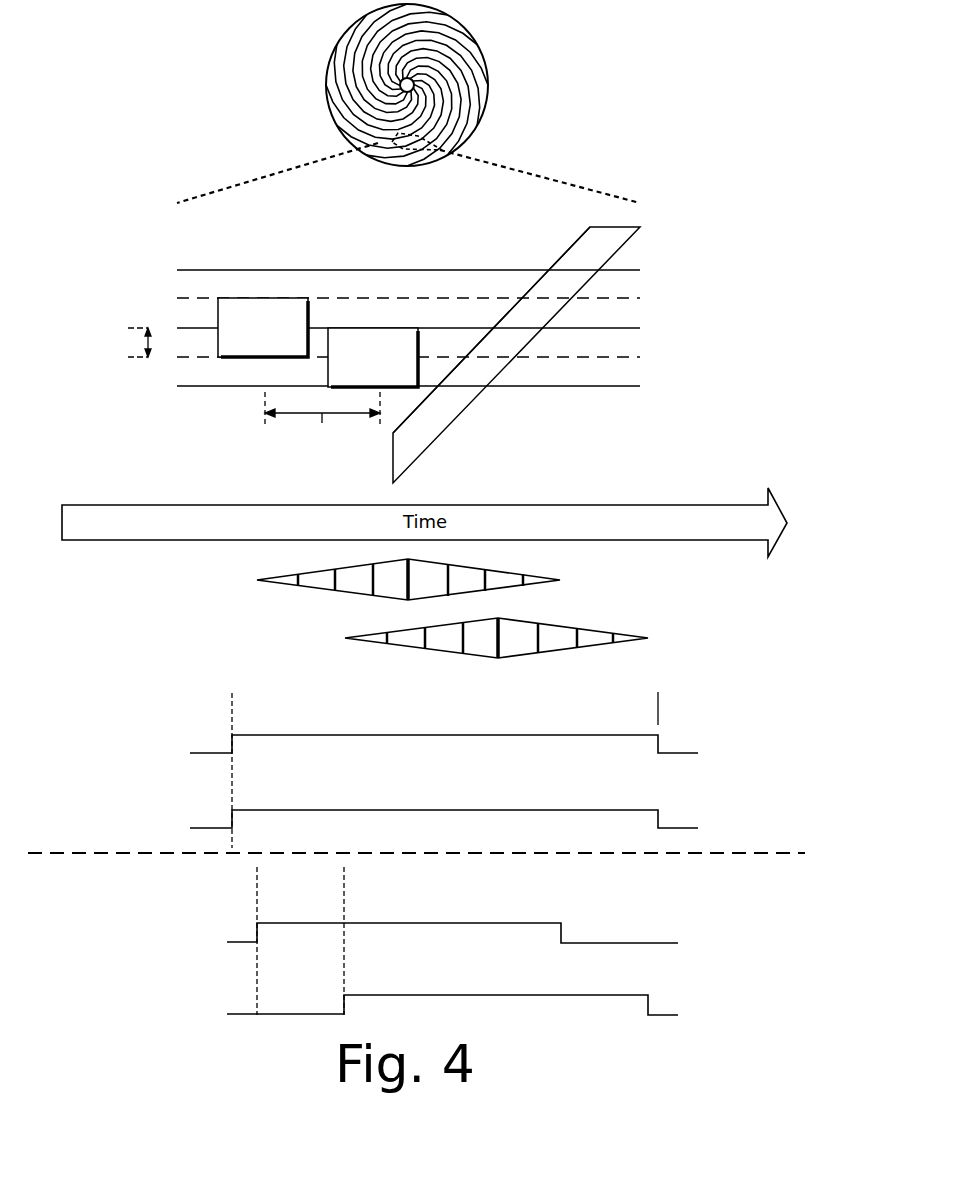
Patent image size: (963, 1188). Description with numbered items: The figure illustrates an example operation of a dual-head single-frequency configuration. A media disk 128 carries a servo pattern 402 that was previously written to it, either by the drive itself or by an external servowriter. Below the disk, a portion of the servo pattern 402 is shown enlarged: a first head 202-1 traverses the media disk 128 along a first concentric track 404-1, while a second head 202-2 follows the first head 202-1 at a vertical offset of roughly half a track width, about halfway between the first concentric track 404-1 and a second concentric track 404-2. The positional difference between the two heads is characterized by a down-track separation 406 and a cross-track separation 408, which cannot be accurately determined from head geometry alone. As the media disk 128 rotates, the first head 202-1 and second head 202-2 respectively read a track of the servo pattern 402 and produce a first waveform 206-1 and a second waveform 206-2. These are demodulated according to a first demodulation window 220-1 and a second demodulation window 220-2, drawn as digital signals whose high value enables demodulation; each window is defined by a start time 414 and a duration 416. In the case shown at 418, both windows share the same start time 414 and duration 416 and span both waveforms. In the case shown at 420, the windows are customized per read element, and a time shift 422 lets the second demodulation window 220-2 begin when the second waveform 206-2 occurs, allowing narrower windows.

The media disk 128 is at (338, 40).
The servo pattern 402 is at (470, 75).
The first head 202-1 is at (373, 357).
The second head 202-2 is at (263, 327).
The first concentric track 404-1 is at (652, 388).
The second concentric track 404-2 is at (652, 330).
The down-track separation 406 is at (322, 443).
The cross-track separation 408 is at (146, 341).
The first waveform 206-1 is at (315, 590).
The second waveform 206-2 is at (373, 640).
The first demodulation window 220-1 is at (257, 930).
The second demodulation window 220-2 is at (642, 970).
The start time 414 is at (232, 785).
The duration 416 is at (658, 712).
The implementation with same start time and duration 418 is at (700, 695).
The implementation with customized demodulation windows 420 is at (700, 907).
The time shift 422 is at (344, 888).